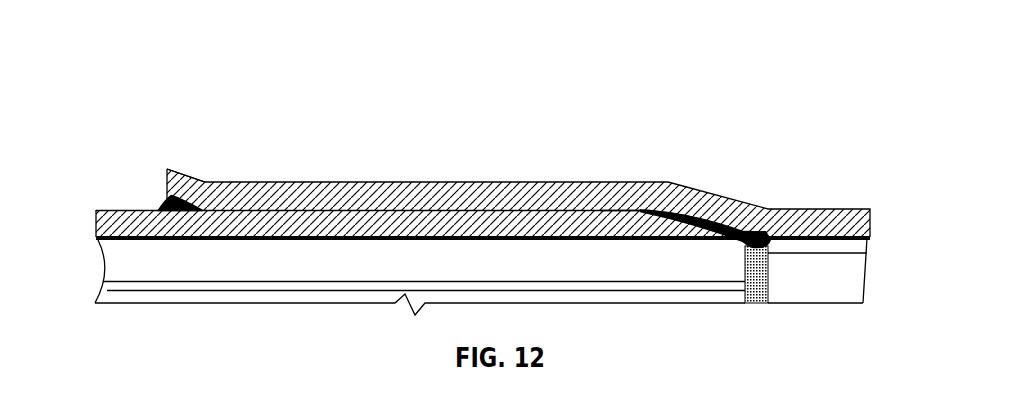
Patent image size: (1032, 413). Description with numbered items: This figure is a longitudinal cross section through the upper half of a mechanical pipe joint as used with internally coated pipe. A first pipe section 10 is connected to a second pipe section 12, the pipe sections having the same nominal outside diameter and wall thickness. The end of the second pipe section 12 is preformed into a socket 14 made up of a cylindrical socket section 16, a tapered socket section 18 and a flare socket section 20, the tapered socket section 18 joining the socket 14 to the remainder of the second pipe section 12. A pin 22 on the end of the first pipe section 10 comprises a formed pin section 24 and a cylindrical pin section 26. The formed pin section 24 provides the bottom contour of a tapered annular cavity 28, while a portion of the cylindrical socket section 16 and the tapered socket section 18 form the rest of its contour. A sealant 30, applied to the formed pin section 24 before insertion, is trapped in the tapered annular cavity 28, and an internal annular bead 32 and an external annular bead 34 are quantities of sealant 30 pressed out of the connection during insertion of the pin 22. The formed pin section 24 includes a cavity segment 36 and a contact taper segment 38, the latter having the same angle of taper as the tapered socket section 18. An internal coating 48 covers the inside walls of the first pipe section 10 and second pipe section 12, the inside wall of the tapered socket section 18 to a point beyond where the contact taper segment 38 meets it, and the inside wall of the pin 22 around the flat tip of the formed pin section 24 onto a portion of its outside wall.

The first pipe section 10 is at (113, 225).
The second pipe section 12 is at (823, 222).
The socket 14 is at (547, 182).
The cylindrical socket section 16 is at (400, 195).
The tapered socket section 18 is at (712, 202).
The flare socket section 20 is at (183, 168).
The pin 22 is at (479, 253).
The formed pin section 24 is at (678, 242).
The cylindrical pin section 26 is at (356, 232).
The tapered annular cavity 28 is at (642, 208).
The sealant 30 is at (667, 212).
The internal annular bead 32 is at (758, 242).
The external annular bead 34 is at (158, 198).
The cavity segment 36 is at (656, 231).
The contact taper segment 38 is at (721, 240).
The internal coating 48 is at (265, 242).